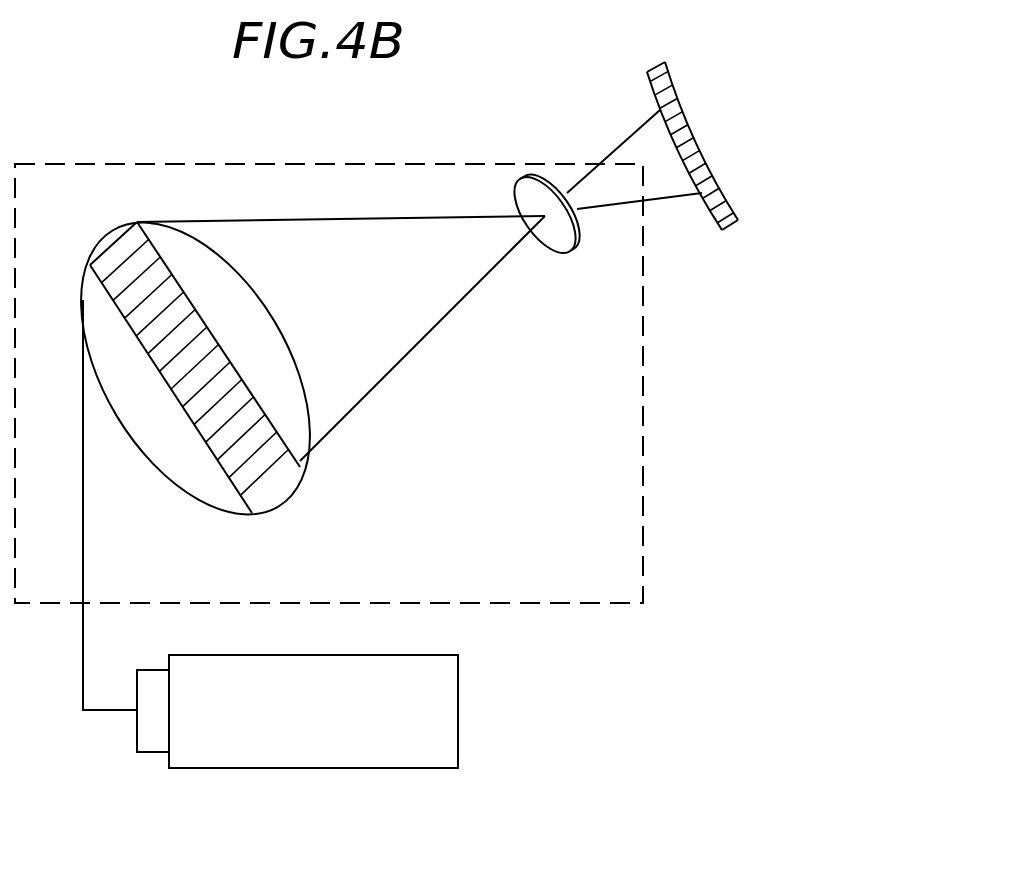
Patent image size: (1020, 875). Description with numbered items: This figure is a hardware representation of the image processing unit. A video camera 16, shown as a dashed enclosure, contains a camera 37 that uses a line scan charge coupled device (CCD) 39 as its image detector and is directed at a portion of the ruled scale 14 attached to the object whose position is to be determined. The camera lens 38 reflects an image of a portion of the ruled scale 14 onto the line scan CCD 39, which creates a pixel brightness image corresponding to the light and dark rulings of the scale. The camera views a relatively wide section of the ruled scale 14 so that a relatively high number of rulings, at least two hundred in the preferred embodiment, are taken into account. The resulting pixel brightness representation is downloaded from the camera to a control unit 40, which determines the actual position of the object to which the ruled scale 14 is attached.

The ruled scale 14 is at (687, 117).
The video camera 16 is at (85, 163).
The camera 37 is at (447, 233).
The camera lens 38 is at (528, 195).
The line scan charge coupled device (CCD) 39 is at (185, 432).
The control unit 40 is at (403, 768).